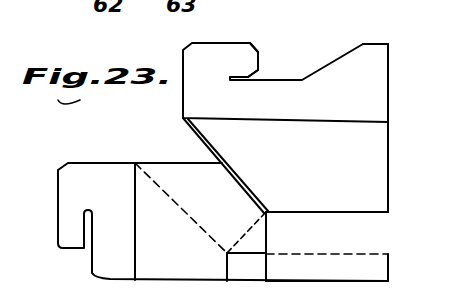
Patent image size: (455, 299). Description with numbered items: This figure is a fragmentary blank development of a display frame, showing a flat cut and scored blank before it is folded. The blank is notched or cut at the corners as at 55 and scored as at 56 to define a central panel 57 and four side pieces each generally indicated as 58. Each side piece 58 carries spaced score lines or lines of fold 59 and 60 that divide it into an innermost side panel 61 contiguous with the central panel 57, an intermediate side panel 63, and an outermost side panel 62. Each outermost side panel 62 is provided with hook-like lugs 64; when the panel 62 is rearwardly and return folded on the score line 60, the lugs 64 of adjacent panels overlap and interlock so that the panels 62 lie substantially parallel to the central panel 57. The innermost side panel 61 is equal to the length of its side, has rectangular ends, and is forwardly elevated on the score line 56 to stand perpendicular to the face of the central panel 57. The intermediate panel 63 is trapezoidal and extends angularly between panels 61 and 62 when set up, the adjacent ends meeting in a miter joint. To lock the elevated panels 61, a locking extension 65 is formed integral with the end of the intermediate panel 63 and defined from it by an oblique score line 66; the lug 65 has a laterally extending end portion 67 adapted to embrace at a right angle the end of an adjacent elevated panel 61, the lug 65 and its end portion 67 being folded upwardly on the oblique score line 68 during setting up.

The corner notch 55 is at (204, 157).
The score line 56 is at (268, 264).
The central panel 57 is at (370, 270).
The side piece 58 is at (380, 42).
The score line 59 is at (324, 211).
The score line 60 is at (312, 122).
The innermost side panel 61 is at (365, 236).
The outermost side panel 62 is at (371, 76).
The intermediate side panel 63 is at (368, 188).
The hook-like lug 64 is at (245, 60).
The locking extension 65 is at (183, 180).
The score line 66 is at (183, 211).
The end portion 67 is at (256, 244).
The oblique score line 68 is at (280, 192).